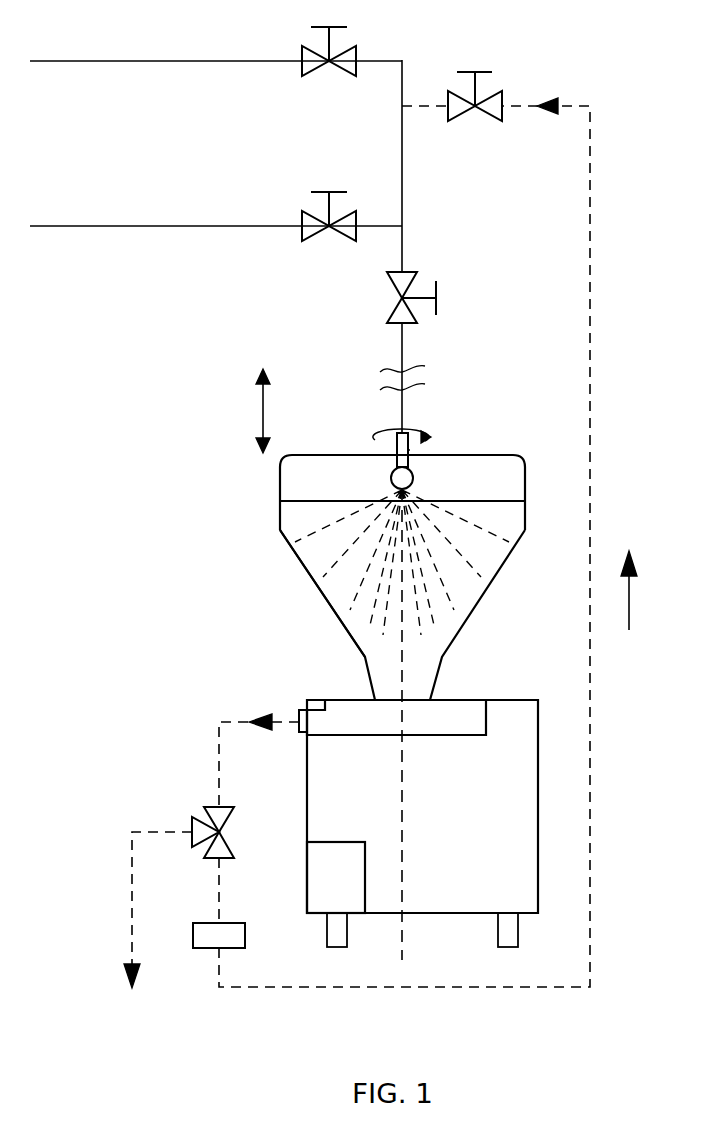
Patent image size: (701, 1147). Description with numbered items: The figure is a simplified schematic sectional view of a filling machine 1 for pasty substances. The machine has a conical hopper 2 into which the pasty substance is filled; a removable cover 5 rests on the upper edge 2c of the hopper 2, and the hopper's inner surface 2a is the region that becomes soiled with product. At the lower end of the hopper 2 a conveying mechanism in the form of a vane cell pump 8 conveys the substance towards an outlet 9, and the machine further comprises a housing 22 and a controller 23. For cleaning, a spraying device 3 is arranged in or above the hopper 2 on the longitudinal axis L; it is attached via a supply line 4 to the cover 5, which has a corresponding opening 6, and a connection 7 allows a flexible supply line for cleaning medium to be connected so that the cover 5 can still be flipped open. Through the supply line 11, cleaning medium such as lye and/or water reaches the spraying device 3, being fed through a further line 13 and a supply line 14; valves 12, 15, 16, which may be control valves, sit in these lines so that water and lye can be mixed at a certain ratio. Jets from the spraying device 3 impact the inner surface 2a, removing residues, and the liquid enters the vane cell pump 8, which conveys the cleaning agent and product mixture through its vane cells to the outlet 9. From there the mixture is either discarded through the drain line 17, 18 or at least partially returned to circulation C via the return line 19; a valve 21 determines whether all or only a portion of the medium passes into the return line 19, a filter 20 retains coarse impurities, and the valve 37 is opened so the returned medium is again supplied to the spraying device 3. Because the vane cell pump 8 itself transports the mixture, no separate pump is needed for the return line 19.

The filling machine 1 is at (232, 551).
The hopper 2 is at (482, 600).
The inner surface 2a is at (332, 594).
The upper edge 2c is at (281, 501).
The spraying device 3 is at (415, 478).
The supply line 4 is at (396, 462).
The cover 5 is at (527, 487).
The opening 6 is at (410, 452).
The connection 7 is at (398, 431).
The vane cell pump 8 is at (472, 737).
The outlet 9 is at (297, 708).
The supply line 11 is at (404, 407).
The valve 12 is at (417, 278).
The further line 13 is at (139, 226).
The supply line 14 is at (139, 61).
The valve 15 is at (311, 76).
The valve 16 is at (311, 241).
The drain line 17 is at (217, 755).
The drain line 18 is at (131, 887).
The return line 19 is at (592, 836).
The filter 20 is at (200, 950).
The valve 21 is at (236, 832).
The housing 22 is at (539, 890).
The controller 23 is at (338, 841).
The valve 37 is at (458, 121).
The longitudinal axis L is at (407, 950).
The circulation C is at (640, 590).